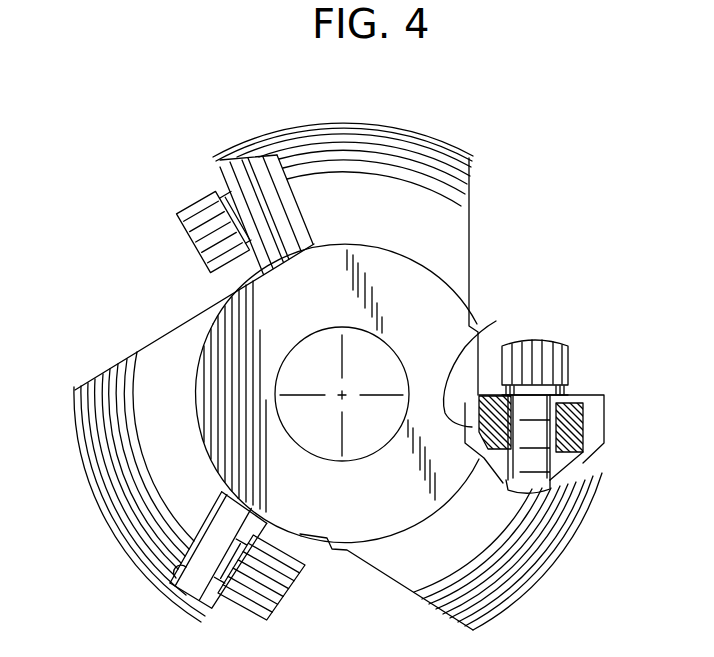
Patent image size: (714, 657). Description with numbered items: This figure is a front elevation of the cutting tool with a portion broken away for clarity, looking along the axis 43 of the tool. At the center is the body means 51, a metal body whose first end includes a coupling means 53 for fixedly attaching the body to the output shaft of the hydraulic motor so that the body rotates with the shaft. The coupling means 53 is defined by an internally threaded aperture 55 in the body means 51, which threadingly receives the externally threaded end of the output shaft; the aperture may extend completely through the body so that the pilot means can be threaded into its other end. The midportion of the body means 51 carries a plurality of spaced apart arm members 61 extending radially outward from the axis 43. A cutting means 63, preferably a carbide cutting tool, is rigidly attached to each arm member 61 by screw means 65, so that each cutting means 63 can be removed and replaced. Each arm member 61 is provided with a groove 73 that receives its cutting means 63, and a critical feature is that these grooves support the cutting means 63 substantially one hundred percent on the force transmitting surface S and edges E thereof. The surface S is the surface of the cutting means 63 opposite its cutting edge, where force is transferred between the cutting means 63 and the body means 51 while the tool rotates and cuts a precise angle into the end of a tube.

The body means 51 is at (538, 150).
The coupling means 53 is at (322, 357).
The internally threaded aperture 55 is at (397, 366).
The axis 43 is at (360, 412).
The arm members 61 is at (407, 140).
The cutting means 63 is at (225, 194).
The screw means 65 is at (190, 656).
The groove 73 is at (220, 162).
The edges E is at (632, 440).
The force transmitting surface S is at (590, 478).